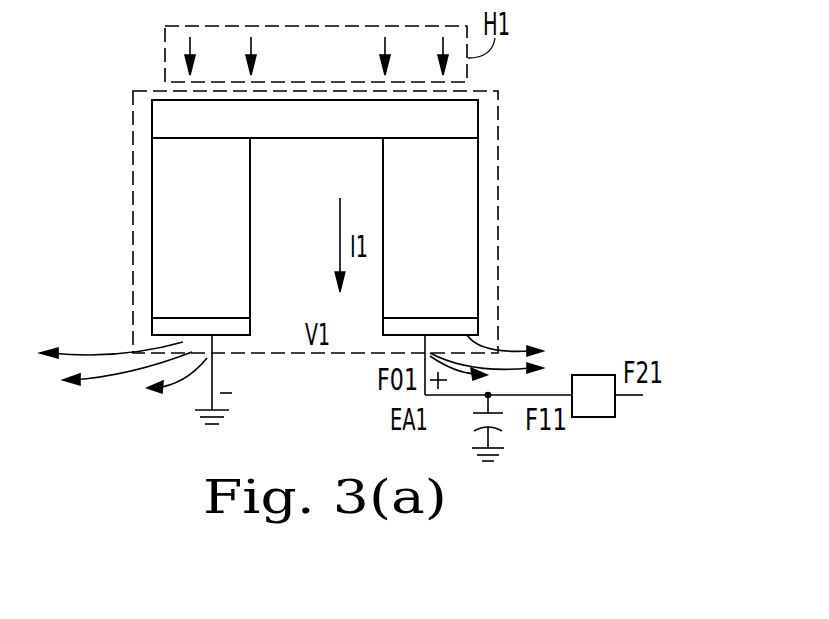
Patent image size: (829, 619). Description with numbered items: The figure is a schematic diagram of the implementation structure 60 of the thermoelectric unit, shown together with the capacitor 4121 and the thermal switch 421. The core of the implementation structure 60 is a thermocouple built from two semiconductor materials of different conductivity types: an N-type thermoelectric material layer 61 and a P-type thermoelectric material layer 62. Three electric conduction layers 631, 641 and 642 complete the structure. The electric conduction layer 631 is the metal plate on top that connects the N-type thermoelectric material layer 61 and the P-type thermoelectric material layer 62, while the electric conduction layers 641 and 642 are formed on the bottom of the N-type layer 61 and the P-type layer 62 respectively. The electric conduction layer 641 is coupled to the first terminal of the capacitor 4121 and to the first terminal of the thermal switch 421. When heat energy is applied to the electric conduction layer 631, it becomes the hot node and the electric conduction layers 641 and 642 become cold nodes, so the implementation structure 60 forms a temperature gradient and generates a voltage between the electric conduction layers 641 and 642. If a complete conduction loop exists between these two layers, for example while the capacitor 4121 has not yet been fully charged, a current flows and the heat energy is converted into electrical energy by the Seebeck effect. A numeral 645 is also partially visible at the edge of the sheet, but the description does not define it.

The implementation structure 60 is at (132, 132).
The electric conduction layer 631 is at (422, 124).
The P-type thermoelectric material layer 62 is at (195, 259).
The N-type thermoelectric material layer 61 is at (445, 295).
The electric conduction layer 642 is at (182, 328).
The electric conduction layer 641 is at (445, 327).
The thermal switch 421 is at (592, 375).
The capacitor 4121 is at (473, 418).
The electrode (partial, next figure) 645 is at (372, 611).